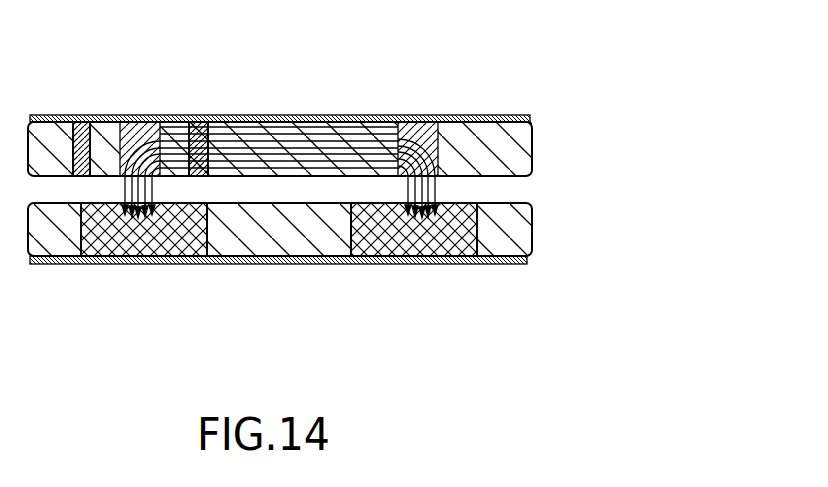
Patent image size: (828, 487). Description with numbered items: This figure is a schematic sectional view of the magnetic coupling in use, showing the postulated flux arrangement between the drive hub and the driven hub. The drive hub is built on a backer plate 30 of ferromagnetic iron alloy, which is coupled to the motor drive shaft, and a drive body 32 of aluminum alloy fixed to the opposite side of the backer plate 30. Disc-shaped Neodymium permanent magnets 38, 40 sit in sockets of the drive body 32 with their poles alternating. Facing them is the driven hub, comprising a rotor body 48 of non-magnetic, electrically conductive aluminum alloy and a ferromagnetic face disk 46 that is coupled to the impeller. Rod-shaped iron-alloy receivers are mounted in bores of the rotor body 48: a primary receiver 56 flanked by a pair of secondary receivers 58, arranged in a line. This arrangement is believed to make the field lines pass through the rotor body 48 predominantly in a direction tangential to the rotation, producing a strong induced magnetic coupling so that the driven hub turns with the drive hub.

The backer plate 30 is at (507, 264).
The drive body 32 is at (520, 230).
The permanent magnet 38 is at (443, 235).
The permanent magnet 40 is at (136, 237).
The face disk 46 is at (500, 117).
The rotor body 48 is at (513, 148).
The primary receiver 56 is at (128, 124).
The secondary receiver 58 is at (82, 124).